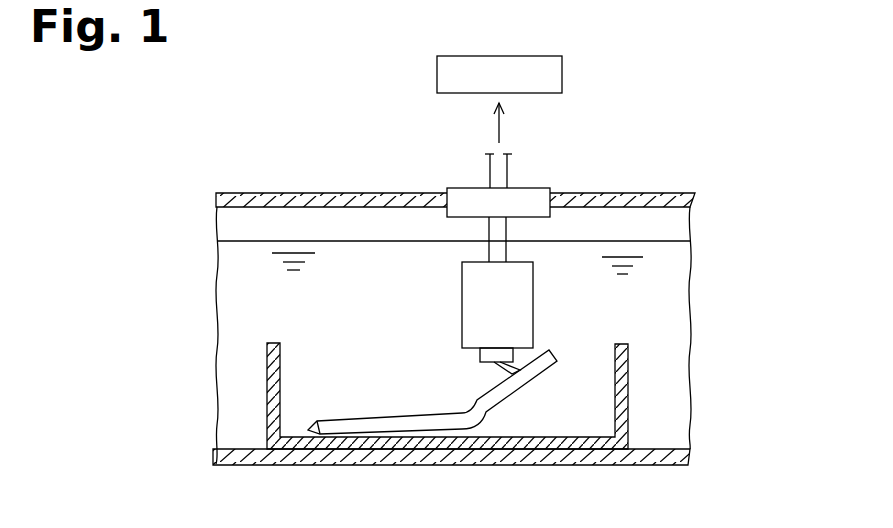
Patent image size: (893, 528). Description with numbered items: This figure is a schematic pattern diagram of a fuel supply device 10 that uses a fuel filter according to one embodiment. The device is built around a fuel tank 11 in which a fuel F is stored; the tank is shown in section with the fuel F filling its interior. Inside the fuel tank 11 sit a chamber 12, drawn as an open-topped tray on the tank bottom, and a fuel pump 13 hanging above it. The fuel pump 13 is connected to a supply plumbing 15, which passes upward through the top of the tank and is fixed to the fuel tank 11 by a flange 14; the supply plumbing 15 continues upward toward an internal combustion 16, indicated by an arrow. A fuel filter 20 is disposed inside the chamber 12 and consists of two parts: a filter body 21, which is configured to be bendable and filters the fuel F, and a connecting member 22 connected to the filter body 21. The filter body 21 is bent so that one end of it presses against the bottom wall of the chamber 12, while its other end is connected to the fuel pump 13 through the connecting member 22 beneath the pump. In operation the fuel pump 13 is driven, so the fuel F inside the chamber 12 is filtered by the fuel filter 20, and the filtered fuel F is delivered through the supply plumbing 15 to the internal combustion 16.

The fuel supply device 10 is at (685, 172).
The fuel tank 11 is at (636, 193).
The chamber 12 is at (626, 378).
The fuel pump 13 is at (497, 305).
The flange 14 is at (542, 188).
The supply plumbing 15 is at (490, 166).
The internal combustion 16 is at (562, 73).
The fuel filter 20 is at (412, 340).
The filter body 21 is at (430, 418).
The connecting member 22 is at (492, 365).
The fuel F is at (688, 309).